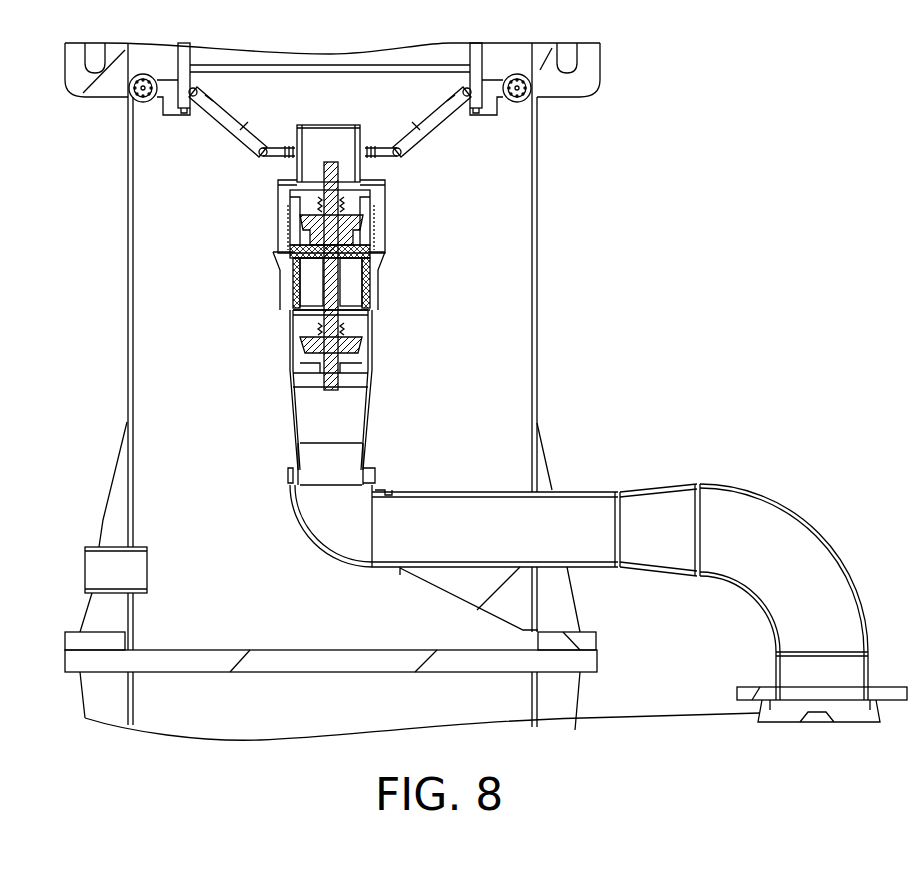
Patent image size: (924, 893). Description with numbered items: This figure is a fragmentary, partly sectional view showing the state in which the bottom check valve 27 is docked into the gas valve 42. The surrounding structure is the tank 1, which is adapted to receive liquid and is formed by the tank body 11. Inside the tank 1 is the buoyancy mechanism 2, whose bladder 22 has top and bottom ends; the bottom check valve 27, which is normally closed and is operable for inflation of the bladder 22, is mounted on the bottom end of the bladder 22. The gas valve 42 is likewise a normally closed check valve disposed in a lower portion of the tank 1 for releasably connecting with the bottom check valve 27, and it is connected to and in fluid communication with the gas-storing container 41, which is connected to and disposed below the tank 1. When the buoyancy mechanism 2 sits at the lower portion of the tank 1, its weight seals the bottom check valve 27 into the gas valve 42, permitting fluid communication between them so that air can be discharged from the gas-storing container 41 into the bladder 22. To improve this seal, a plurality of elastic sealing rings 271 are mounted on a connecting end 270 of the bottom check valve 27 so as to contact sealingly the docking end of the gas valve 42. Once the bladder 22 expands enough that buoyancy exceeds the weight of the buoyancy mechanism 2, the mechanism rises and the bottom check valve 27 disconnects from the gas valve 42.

The tank 1 is at (547, 338).
The tank body 11 is at (537, 372).
The buoyancy mechanism 2 is at (344, 147).
The bladder 22 is at (403, 105).
The bottom check valve 27 is at (283, 211).
The connecting end 270 is at (387, 262).
The elastic sealing rings 271 is at (380, 303).
The gas valve 42 is at (293, 330).
The gas-storing container 41 is at (512, 695).